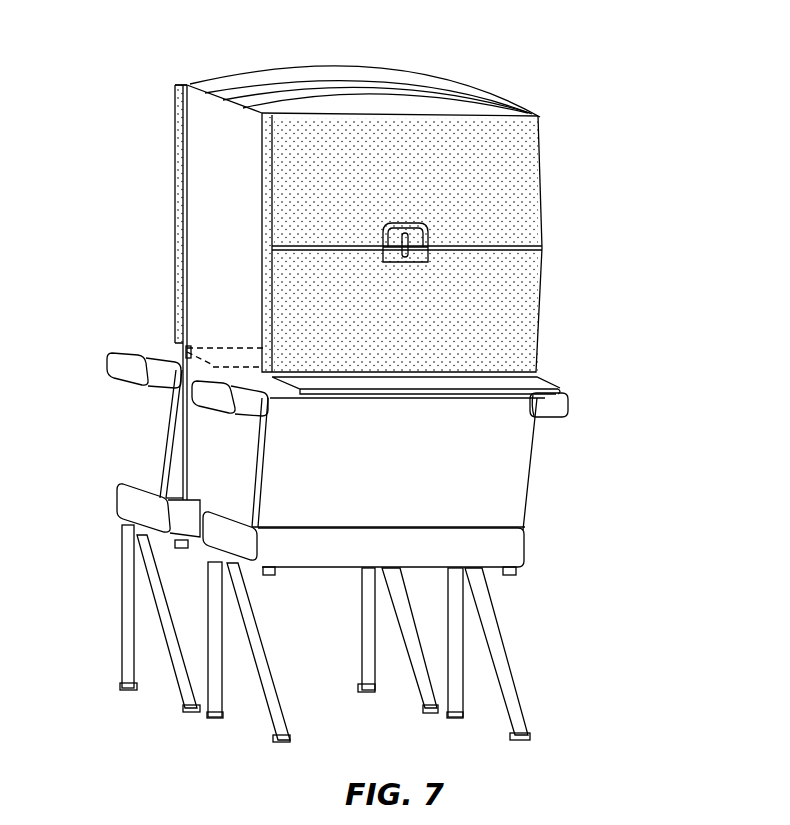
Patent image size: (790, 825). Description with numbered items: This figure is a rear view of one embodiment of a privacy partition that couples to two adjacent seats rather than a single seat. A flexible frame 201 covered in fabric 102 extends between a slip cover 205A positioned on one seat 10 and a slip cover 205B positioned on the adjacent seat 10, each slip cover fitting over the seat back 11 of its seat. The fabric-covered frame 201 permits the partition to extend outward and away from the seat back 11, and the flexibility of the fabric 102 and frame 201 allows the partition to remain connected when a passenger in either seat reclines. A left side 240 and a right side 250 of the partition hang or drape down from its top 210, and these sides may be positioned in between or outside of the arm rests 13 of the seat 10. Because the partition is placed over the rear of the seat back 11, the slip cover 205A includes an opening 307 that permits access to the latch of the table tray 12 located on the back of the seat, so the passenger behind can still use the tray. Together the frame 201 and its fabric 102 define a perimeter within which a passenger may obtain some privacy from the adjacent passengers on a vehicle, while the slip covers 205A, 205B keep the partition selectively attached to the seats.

The seat 10 is at (122, 503).
The seat back 11 is at (170, 433).
The table tray 12 is at (218, 348).
The arm rests 13 is at (113, 367).
The fabric 102 is at (212, 197).
The frame 201 is at (247, 84).
The slip cover 205A is at (532, 188).
The slip cover 205B is at (178, 127).
The top 210 is at (368, 84).
The left side 240 is at (200, 263).
The right side 250 is at (560, 126).
The opening 307 is at (425, 250).